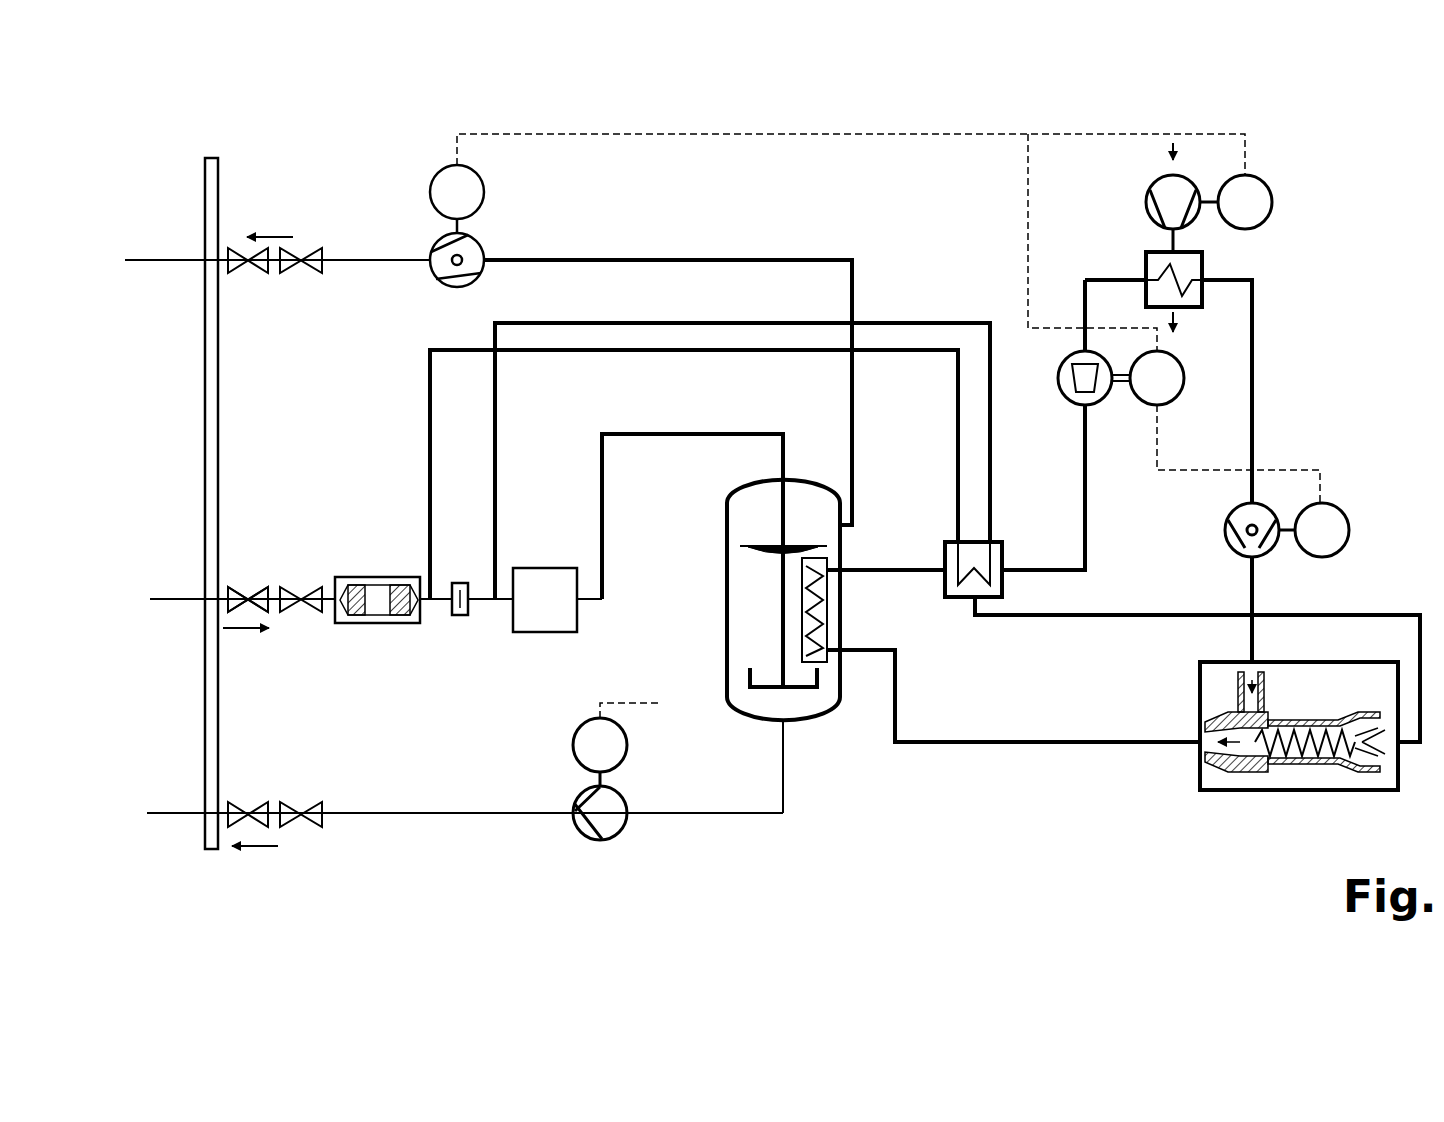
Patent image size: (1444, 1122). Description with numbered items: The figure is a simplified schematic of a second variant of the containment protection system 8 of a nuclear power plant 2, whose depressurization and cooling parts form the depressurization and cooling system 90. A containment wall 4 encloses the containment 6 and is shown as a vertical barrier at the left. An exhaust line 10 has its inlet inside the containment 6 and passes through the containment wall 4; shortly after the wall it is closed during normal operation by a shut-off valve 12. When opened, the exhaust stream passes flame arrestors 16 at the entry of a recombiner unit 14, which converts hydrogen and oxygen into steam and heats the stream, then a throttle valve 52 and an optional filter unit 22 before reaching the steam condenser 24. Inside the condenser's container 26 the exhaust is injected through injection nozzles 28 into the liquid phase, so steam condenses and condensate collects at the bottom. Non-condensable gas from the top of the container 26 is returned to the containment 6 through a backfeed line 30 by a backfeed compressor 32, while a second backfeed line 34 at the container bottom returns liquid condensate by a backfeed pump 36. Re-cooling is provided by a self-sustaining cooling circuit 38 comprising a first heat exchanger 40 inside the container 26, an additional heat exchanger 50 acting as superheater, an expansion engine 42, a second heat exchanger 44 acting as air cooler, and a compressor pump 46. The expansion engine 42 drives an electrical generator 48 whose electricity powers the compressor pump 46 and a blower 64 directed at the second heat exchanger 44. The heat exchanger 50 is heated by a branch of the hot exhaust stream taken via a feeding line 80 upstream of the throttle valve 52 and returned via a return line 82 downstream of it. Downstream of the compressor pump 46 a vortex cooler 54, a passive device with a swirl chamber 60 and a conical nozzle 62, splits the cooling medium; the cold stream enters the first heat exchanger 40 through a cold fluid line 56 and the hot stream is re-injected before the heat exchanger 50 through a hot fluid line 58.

The nuclear power plant 2 is at (164, 86).
The containment wall 4 is at (218, 200).
The containment 6 is at (64, 371).
The containment protection system 8 is at (907, 878).
The depressurization and cooling system 90 is at (936, 862).
The exhaust line 10 is at (665, 434).
The shut-off valve 12 is at (255, 587).
The recombiner unit 14 is at (376, 638).
The flame arrestors 16 is at (357, 623).
The filter unit 22 is at (548, 568).
The steam condenser 24 is at (756, 644).
The container 26 is at (727, 617).
The injection nozzles 28 is at (748, 680).
The backfeed line 30 is at (720, 258).
The backfeed compressor 32 is at (485, 277).
The backfeed line 34 is at (400, 815).
The backfeed pump 36 is at (575, 800).
The cooling circuit 38 is at (1136, 528).
The first heat exchanger 40 is at (822, 665).
The expansion engine 42 is at (1063, 400).
The second heat exchanger 44 is at (1146, 270).
The compressor pump 46 is at (1228, 545).
The electrical generator 48 is at (1143, 403).
The heat exchanger 50 is at (950, 542).
The throttle valve 52 is at (462, 583).
The vortex cooler 54 is at (1299, 753).
The cold fluid line 56 is at (1000, 740).
The hot fluid line 58 is at (1070, 617).
The swirl chamber 60 is at (1300, 718).
The conical nozzle 62 is at (1365, 718).
The blower 64 is at (1146, 200).
The feeding line 80 is at (430, 402).
The return line 82 is at (495, 425).